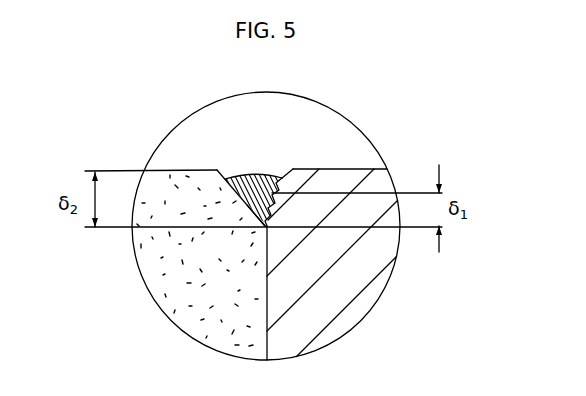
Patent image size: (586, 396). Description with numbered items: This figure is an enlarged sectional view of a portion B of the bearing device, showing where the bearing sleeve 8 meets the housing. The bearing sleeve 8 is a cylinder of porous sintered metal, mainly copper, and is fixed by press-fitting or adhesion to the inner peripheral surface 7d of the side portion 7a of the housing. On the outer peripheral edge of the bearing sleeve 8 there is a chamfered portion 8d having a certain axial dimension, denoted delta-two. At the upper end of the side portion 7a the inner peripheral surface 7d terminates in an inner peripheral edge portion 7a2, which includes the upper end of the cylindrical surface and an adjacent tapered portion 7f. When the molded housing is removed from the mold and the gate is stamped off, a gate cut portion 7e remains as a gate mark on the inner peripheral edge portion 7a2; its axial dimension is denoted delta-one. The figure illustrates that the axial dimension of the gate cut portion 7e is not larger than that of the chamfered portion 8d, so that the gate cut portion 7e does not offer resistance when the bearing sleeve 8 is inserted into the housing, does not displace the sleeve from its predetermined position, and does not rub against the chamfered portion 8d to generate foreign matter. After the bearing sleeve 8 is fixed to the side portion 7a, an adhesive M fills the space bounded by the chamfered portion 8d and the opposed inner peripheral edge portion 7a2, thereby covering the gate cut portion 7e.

The portion B is at (366, 132).
The side portion 7a is at (368, 270).
The inner peripheral edge portion 7a2 is at (278, 170).
The inner peripheral surface 7d is at (267, 310).
The gate cut portion 7e is at (257, 214).
The tapered portion 7f is at (291, 169).
The bearing sleeve 8 is at (172, 293).
The chamfered portion 8d is at (225, 171).
The adhesive M is at (250, 171).